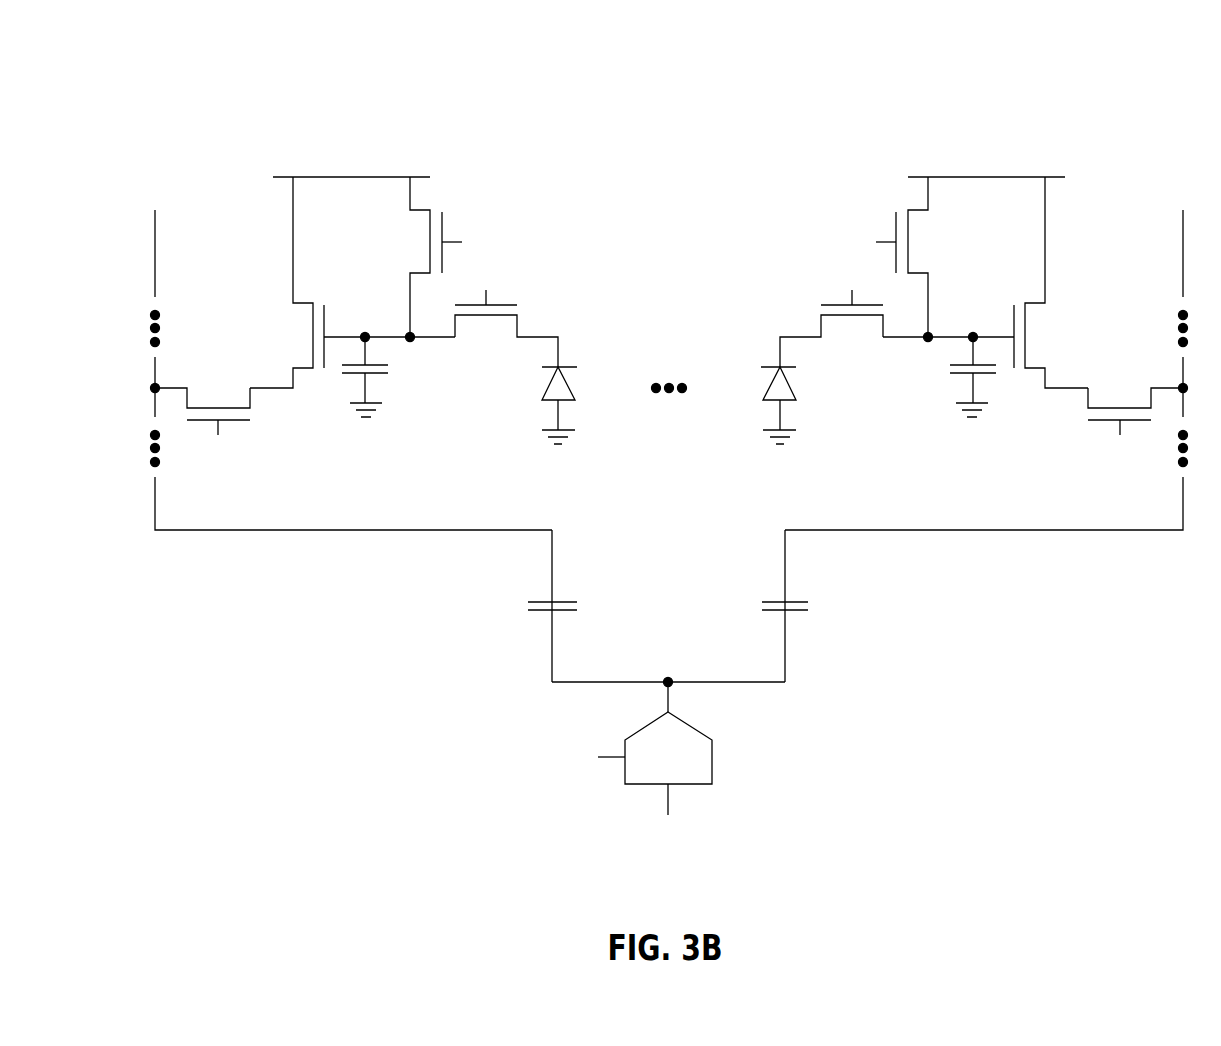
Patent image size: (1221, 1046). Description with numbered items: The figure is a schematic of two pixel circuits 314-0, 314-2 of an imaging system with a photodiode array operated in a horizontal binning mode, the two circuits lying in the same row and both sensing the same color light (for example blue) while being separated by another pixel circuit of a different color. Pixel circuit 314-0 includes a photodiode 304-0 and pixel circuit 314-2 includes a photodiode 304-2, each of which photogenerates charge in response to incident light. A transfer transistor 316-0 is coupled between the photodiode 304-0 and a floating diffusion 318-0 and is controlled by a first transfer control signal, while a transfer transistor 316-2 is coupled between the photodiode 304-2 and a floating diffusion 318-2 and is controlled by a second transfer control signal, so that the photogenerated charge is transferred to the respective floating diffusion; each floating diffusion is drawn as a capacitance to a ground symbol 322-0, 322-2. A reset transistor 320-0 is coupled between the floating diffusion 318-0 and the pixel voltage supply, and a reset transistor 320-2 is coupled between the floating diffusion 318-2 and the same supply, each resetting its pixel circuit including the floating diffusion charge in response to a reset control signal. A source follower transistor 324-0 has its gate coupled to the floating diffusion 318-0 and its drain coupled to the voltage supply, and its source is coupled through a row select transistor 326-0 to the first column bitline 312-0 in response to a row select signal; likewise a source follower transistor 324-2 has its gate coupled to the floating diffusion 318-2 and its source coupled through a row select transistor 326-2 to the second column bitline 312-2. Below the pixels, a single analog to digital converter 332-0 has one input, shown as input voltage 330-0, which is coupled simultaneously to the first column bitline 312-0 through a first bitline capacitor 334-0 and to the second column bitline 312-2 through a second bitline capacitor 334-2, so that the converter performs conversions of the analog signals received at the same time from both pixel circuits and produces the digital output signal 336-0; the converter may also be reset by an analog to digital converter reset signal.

The pixel circuit 314-0 is at (202, 63).
The pixel circuit 314-2 is at (1179, 63).
The reset transistor 320-0 is at (412, 242).
The reset transistor 320-2 is at (930, 243).
The source follower transistor 324-0 is at (288, 318).
The source follower transistor 324-2 is at (1050, 318).
The row select transistor 326-0 is at (217, 392).
The row select transistor 326-2 is at (1119, 392).
The floating diffusion 318-0 is at (368, 345).
The floating diffusion 318-2 is at (968, 345).
The ground 322-0 is at (353, 380).
The ground 322-2 is at (988, 380).
The transfer transistor 316-0 is at (482, 325).
The transfer transistor 316-2 is at (857, 325).
The photodiode 304-0 is at (538, 405).
The photodiode 304-2 is at (806, 405).
The first column bitline 312-0 is at (205, 514).
The second column bitline 312-2 is at (1133, 514).
The first bitline capacitor 334-0 is at (541, 617).
The second bitline capacitor 334-2 is at (800, 618).
The input voltage 330-0 is at (650, 657).
The analog to digital converter 332-0 is at (718, 762).
The digital output signal 336-0 is at (712, 824).